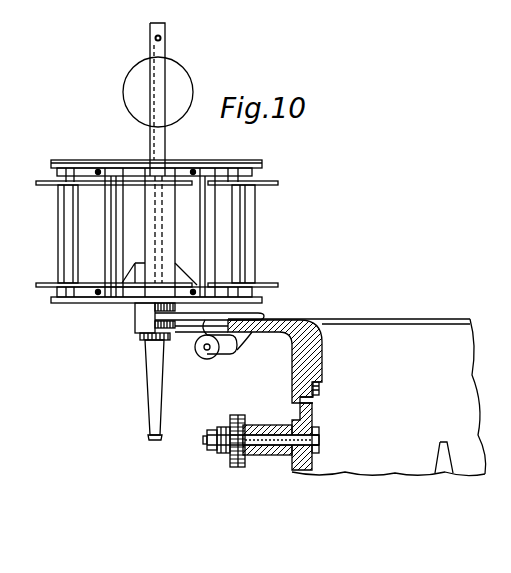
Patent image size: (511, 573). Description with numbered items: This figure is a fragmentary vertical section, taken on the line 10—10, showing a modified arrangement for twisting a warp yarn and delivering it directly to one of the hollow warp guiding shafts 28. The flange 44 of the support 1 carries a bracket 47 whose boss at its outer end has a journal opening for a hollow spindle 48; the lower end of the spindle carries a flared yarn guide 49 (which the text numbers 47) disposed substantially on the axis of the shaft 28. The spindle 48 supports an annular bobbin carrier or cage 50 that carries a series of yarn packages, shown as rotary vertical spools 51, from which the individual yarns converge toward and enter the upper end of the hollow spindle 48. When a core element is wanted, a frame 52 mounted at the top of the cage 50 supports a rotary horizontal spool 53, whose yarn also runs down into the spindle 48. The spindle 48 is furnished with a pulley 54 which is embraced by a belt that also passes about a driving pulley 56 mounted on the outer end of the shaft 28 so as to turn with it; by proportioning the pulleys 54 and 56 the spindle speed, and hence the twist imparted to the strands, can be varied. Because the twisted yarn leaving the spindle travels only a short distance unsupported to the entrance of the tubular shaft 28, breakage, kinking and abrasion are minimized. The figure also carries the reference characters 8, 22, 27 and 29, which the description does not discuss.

The support 1 is at (322, 360).
The base plate 8 is at (437, 452).
The section line 10 is at (303, 400).
The screw 22 is at (314, 392).
The gear 27 is at (237, 467).
The hollow shaft 28 is at (272, 427).
The nut 29 is at (320, 437).
The flange 44 is at (240, 340).
The bracket 47 is at (215, 314).
The hollow spindle 48 is at (150, 346).
The flared yarn guide 49 is at (150, 438).
The annular bobbin carrier or cage 50 is at (72, 301).
The rotary vertical spools 51 is at (66, 219).
The frame 52 is at (160, 143).
The rotary horizontal spool 53 is at (182, 80).
The pulley 54 is at (139, 337).
The driving pulley 56 is at (222, 428).